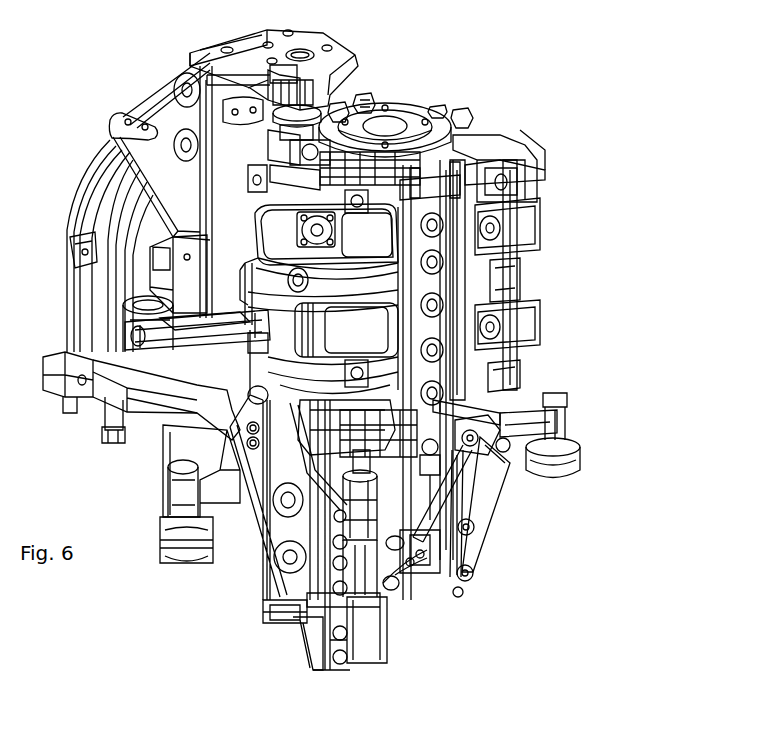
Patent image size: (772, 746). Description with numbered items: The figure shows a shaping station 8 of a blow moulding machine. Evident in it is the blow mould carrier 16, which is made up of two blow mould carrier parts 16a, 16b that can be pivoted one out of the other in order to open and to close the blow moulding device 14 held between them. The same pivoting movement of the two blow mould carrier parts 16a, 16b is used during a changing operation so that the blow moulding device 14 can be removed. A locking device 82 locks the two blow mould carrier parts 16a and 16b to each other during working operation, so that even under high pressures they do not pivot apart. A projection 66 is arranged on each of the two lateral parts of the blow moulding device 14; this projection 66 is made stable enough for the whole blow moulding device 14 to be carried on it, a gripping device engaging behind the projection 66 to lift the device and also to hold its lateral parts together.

The shaping station 8 is at (556, 160).
The blow moulding device 14 is at (440, 100).
The blow mould carrier 16 is at (365, 335).
The blow mould carrier part 16a is at (352, 235).
The blow mould carrier part 16b is at (490, 137).
The projection 66 is at (362, 97).
The locking device 82 is at (467, 257).